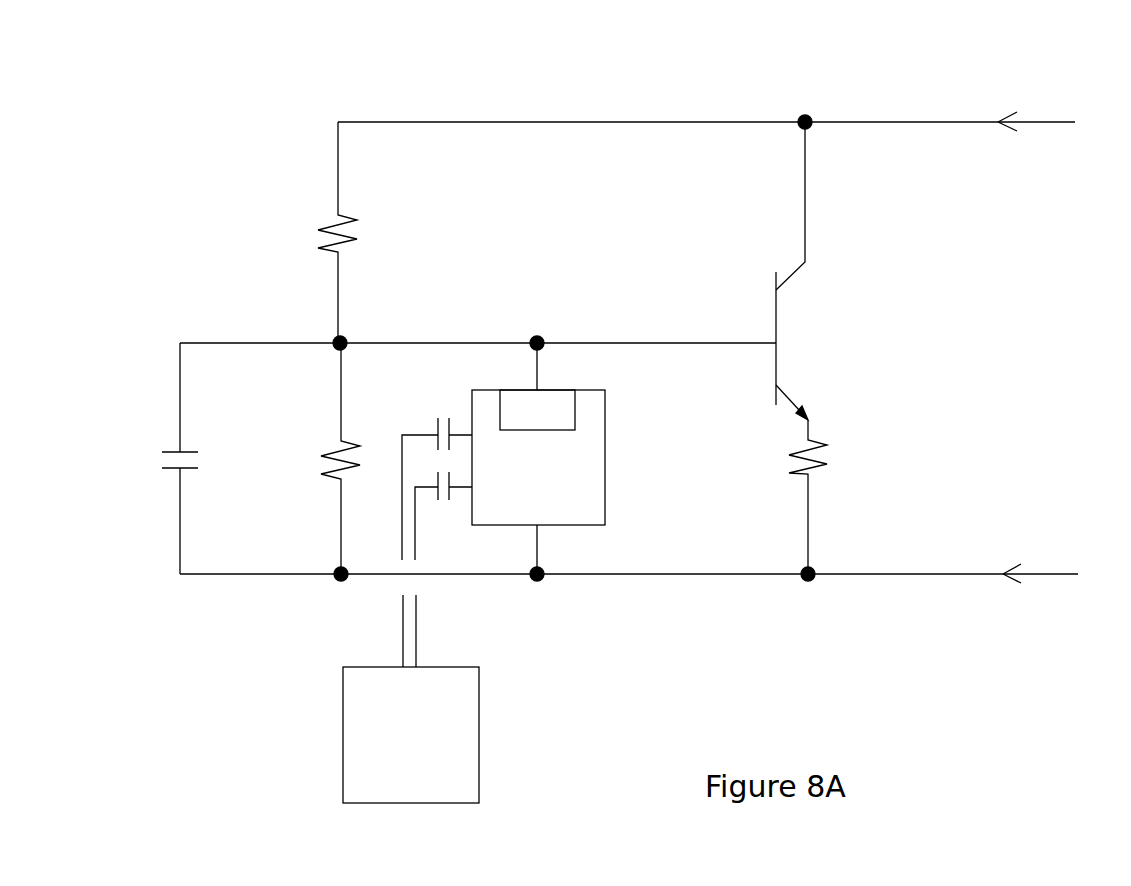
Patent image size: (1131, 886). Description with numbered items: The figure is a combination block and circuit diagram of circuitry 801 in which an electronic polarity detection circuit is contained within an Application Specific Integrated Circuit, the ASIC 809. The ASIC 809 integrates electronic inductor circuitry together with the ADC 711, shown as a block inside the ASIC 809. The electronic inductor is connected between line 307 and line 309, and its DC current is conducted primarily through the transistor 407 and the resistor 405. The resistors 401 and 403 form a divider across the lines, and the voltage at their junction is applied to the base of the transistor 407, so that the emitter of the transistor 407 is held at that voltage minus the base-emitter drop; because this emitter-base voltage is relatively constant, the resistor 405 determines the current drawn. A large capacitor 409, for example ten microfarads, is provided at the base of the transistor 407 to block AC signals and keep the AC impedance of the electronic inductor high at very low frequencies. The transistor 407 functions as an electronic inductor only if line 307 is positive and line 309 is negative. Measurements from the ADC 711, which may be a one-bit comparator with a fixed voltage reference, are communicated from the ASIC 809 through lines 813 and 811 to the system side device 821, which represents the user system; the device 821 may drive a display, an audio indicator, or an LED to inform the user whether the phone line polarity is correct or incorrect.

The charging circuit 801 is at (755, 88).
The line 307 is at (1033, 113).
The line 309 is at (1036, 584).
The resistor 401 is at (309, 234).
The resistor 403 is at (311, 466).
The resistor 405 is at (841, 467).
The transistor 407 is at (800, 344).
The capacitor 409 is at (163, 445).
The ADC 711 is at (550, 393).
The Application Specific Integrated Circuit (ASIC) 809 is at (538, 458).
The line 811 is at (428, 630).
The line 813 is at (391, 628).
The system side device 821 is at (494, 738).